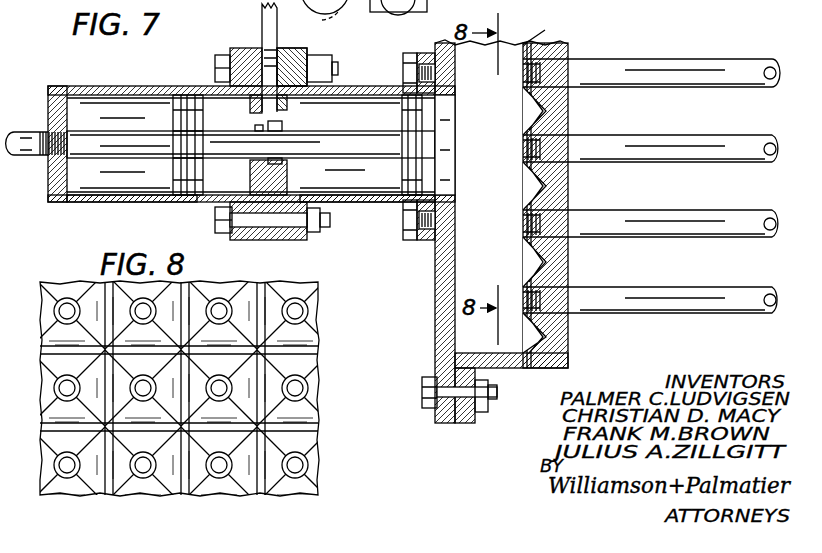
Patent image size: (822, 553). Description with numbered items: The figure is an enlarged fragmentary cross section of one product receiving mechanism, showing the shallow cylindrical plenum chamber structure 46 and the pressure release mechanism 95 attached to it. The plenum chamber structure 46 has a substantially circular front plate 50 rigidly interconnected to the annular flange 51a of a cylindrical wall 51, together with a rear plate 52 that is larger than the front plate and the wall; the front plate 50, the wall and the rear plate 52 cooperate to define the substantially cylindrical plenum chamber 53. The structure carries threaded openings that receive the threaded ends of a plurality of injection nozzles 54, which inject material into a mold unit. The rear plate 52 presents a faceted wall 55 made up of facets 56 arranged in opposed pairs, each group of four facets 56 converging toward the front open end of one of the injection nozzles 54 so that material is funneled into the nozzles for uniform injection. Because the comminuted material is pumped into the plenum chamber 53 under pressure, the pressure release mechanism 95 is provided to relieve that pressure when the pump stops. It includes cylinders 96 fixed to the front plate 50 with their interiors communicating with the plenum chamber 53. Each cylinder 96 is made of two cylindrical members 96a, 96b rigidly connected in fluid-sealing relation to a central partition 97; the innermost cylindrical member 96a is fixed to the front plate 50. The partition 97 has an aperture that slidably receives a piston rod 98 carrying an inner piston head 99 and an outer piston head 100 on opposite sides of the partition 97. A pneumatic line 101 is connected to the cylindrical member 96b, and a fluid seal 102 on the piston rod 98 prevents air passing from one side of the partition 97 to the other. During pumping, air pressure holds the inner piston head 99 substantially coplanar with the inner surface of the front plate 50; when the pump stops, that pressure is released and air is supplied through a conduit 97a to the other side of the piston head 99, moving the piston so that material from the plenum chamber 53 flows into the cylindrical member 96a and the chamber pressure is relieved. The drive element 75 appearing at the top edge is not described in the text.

In FIG. 7, the plenum chamber structure 46 is at (495, 239).
In FIG. 7, the front plate 50 is at (440, 326).
In FIG. 7, the cylindrical wall 51 is at (517, 368).
In FIG. 7, the annular flange 51a is at (462, 420).
In FIG. 7, the rear plate 52 is at (558, 332).
In FIG. 7, the plenum chamber 53 is at (504, 173).
In FIG. 7, the injection nozzles 54 is at (700, 98).
In FIG. 8, the injection nozzles 54 is at (217, 474).
In FIG. 7, the faceted wall 55 is at (507, 199).
In FIG. 8, the faceted wall 55 is at (183, 380).
In FIG. 7, the facets 56 is at (540, 246).
In FIG. 8, the facets 56 is at (52, 366).
In FIG. 7, the drive wheel 75 is at (337, 22).
In FIG. 7, the pressure release mechanism 95 is at (249, 45).
In FIG. 7, the cylinders 96 is at (157, 86).
In FIG. 7, the innermost cylindrical member 96a is at (375, 204).
In FIG. 7, the cylindrical member 96b is at (137, 204).
In FIG. 7, the central partition 97 is at (298, 54).
In FIG. 7, the conduit 97a is at (262, 18).
In FIG. 7, the piston rod 98 is at (395, 151).
In FIG. 7, the inner piston head 99 is at (418, 176).
In FIG. 7, the outer piston head 100 is at (175, 134).
In FIG. 7, the pneumatic line 101 is at (28, 132).
In FIG. 7, the fluid seal 102 is at (283, 128).